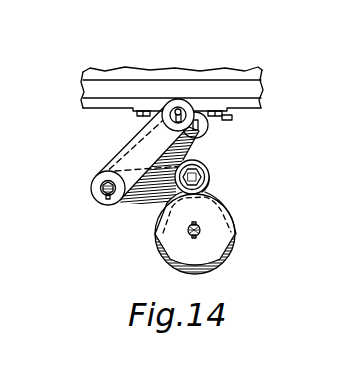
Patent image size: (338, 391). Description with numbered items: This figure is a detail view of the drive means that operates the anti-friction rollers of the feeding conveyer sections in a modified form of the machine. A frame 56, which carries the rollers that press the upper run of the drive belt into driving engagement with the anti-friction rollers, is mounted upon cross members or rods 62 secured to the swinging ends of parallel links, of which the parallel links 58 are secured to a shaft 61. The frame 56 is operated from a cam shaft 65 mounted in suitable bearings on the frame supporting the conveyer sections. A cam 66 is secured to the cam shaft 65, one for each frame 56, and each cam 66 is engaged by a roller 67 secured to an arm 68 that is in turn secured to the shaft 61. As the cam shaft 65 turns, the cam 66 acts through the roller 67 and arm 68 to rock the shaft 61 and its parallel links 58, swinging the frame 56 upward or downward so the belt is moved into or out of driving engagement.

The frame 56 is at (265, 81).
The parallel link 58 is at (143, 134).
The shaft 61 is at (105, 189).
The cross member 62 is at (196, 126).
The cam shaft 65 is at (190, 234).
The cam 66 is at (231, 222).
The roller 67 is at (211, 174).
The arm 68 is at (160, 203).